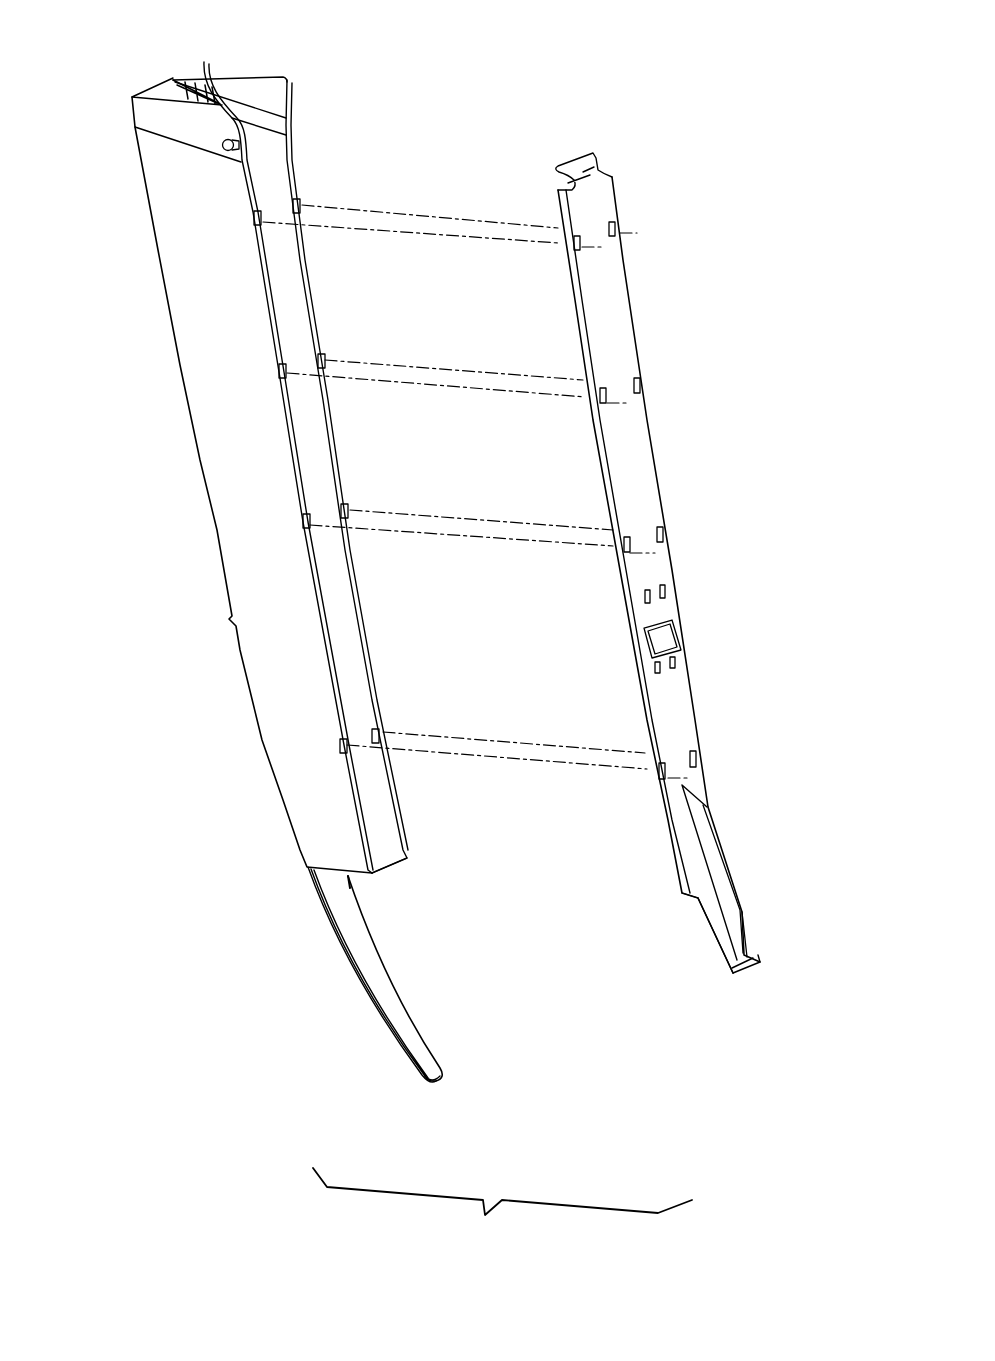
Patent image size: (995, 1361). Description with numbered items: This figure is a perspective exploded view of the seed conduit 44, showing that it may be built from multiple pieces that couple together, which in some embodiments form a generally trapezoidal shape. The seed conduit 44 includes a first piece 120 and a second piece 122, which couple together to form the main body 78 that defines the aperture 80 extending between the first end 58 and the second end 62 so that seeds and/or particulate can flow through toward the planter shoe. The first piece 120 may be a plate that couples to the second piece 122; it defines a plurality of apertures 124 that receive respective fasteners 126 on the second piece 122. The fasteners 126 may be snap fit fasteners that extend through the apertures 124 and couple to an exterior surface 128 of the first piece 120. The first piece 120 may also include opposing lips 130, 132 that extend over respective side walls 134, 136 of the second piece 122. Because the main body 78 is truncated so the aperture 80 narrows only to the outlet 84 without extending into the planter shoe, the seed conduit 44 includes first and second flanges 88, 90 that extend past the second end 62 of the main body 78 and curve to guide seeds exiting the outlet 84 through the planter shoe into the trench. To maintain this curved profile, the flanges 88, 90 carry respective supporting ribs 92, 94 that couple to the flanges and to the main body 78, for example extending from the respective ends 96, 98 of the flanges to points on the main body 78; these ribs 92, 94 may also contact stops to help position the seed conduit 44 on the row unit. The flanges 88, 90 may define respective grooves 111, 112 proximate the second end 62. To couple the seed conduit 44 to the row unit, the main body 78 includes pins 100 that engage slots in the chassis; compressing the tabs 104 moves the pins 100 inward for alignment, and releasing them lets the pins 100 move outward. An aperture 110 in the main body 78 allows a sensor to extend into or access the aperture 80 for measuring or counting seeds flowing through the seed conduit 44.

The seed conduit 44 is at (675, 135).
The first end 58 is at (160, 48).
The second end 62 is at (168, 881).
The main body 78 is at (185, 695).
The aperture 80 is at (294, 318).
The outlet 84 is at (365, 878).
The first flange 88 is at (752, 957).
The second flange 90 is at (410, 1020).
The supporting rib 92 is at (713, 863).
The supporting rib 94 is at (395, 1057).
The end of first flange 96 is at (738, 975).
The end of second flange 98 is at (442, 1078).
The pin 100 is at (290, 125).
The tab 104 is at (204, 80).
The aperture 110 is at (672, 632).
The groove 111 is at (702, 920).
The groove 112 is at (320, 883).
The first piece 120 is at (623, 343).
The second piece 122 is at (233, 558).
The aperture 124 is at (615, 237).
The fastener 126 is at (297, 200).
The exterior surface 128 is at (650, 497).
The lip 130 is at (574, 300).
The lip 132 is at (613, 202).
The side wall 134 is at (168, 177).
The side wall 136 is at (365, 663).